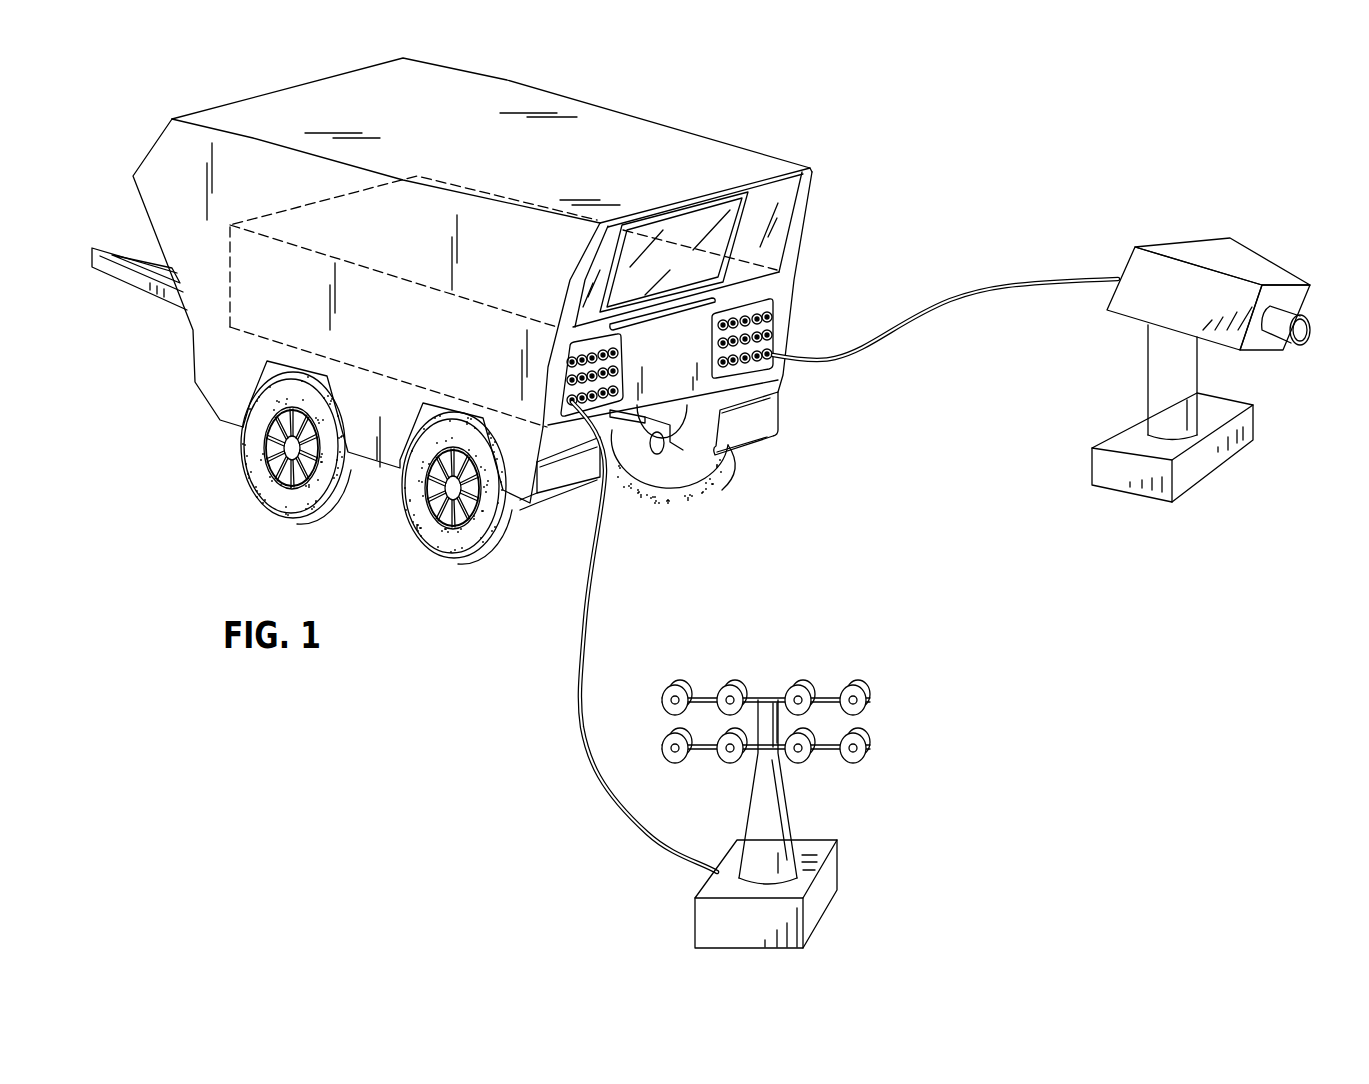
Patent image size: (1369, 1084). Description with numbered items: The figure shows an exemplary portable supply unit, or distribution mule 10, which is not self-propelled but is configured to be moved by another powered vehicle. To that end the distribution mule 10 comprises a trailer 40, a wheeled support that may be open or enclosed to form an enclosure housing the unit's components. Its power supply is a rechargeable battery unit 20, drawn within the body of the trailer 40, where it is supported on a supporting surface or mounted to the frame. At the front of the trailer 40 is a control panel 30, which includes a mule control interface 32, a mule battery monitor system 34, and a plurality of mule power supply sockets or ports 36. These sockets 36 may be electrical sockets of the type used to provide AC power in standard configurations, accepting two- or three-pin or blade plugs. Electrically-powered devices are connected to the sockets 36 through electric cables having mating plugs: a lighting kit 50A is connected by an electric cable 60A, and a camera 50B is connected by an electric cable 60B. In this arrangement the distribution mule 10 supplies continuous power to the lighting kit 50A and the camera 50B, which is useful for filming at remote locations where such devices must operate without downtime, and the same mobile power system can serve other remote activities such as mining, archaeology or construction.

The distribution mule 10 is at (567, 98).
The battery unit 20 is at (453, 301).
The control panel 30 is at (730, 220).
The mule control interface 32 is at (773, 312).
The mule battery monitor system 34 is at (773, 337).
The mule power supply sockets or ports 36 is at (712, 327).
The trailer 40 is at (222, 382).
The lighting kit 50A is at (820, 905).
The camera 50B is at (1200, 463).
The electric cable 60A is at (578, 666).
The electric cable 60B is at (1067, 277).